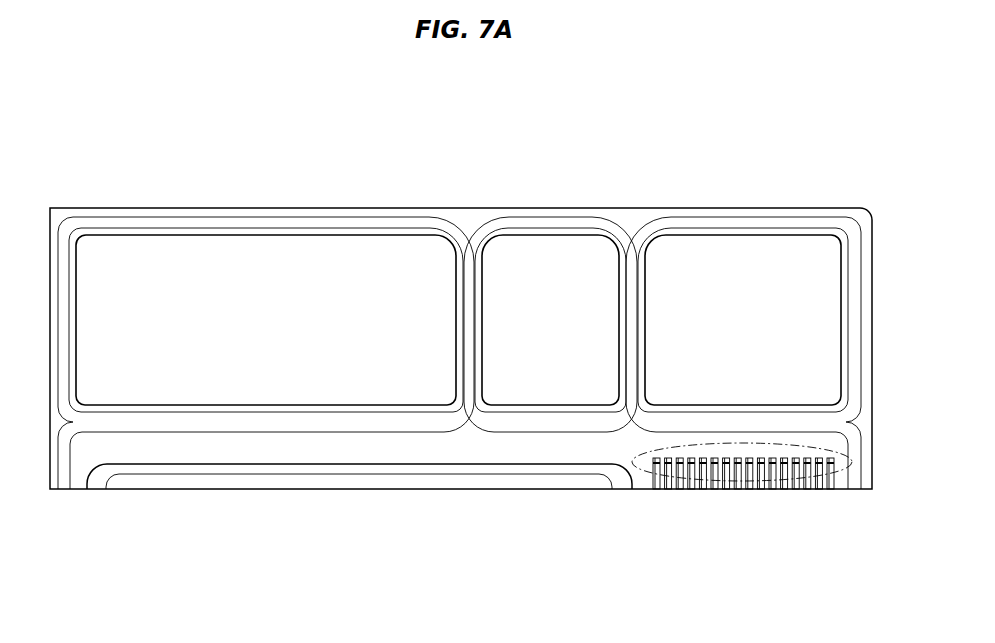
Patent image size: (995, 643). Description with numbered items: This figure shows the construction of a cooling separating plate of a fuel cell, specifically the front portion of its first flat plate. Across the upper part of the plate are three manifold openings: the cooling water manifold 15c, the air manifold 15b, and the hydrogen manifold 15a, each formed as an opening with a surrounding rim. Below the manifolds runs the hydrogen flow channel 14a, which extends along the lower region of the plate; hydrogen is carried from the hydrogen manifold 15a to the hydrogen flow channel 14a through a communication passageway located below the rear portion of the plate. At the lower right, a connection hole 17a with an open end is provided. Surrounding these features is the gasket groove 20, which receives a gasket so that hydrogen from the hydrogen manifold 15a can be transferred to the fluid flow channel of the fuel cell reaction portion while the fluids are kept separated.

The gasket groove 20 is at (792, 218).
The hydrogen manifold 15a is at (739, 260).
The air manifold 15b is at (548, 257).
The cooling water manifold 15c is at (232, 262).
The hydrogen flow channel 14a is at (337, 470).
The connection hole 17a is at (746, 482).